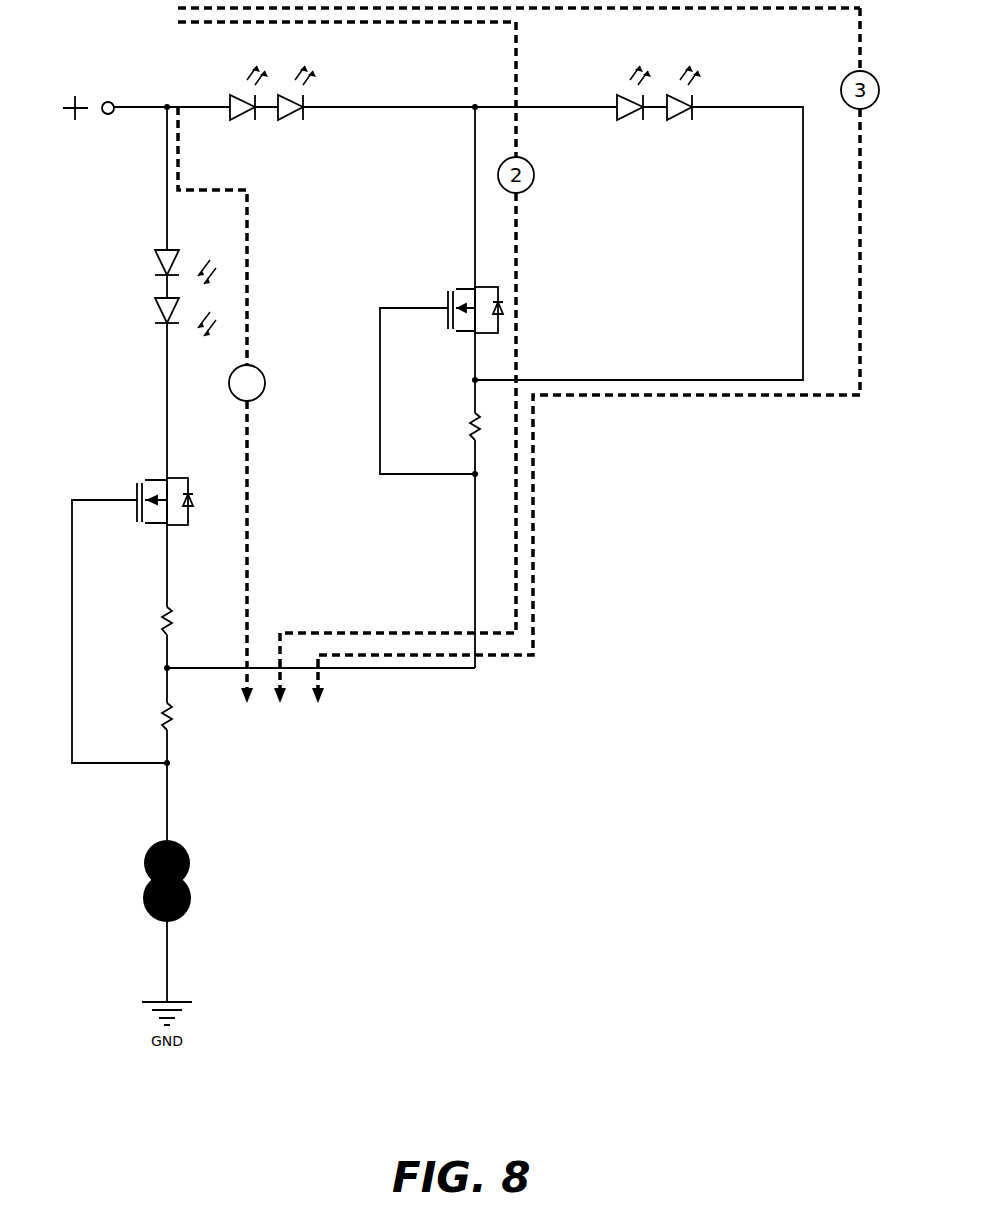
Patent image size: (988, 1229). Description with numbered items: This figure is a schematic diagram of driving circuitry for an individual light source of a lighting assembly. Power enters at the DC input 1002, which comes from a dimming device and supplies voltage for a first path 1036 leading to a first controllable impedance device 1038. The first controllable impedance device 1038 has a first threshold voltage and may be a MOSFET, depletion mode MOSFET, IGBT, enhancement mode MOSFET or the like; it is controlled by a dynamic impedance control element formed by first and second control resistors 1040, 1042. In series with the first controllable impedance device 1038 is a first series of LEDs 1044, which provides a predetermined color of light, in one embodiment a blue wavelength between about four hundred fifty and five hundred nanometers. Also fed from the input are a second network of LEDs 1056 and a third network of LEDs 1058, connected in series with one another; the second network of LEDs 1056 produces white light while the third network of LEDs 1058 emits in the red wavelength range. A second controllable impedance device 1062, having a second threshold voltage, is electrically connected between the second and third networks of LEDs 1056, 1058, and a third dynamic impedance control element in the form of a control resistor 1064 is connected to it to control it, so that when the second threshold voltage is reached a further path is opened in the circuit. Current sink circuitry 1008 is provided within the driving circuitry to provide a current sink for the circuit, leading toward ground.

The DC input 1002 is at (103, 100).
The second network of LEDs 1056 is at (328, 82).
The third network of LEDs 1058 is at (727, 66).
The first series of LEDs 1044 is at (128, 288).
The second controllable impedance device 1062 is at (468, 293).
The control resistor 1064 is at (467, 430).
The first controllable impedance device 1038 is at (145, 483).
The first path 1036 is at (248, 474).
The first control resistor 1040 is at (165, 615).
The second control resistor 1042 is at (168, 715).
The current sink circuitry 1008 is at (192, 867).